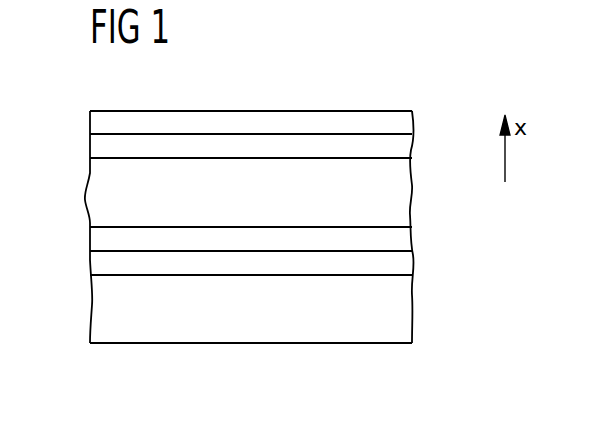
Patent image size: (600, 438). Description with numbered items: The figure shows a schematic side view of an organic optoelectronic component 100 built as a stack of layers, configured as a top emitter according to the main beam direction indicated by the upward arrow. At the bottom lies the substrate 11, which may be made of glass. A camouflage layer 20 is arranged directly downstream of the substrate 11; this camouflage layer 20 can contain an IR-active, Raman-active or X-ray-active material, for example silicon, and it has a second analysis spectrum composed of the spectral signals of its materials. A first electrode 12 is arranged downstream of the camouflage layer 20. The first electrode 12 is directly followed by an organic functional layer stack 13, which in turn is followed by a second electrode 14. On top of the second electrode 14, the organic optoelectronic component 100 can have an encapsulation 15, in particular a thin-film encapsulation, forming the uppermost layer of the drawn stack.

The organic optoelectronic component 100 is at (346, 69).
The encapsulation 15 is at (405, 123).
The second electrode 14 is at (405, 148).
The organic functional layer stack 13 is at (405, 198).
The first electrode 12 is at (405, 238).
The camouflage layer 20 is at (405, 263).
The substrate 11 is at (405, 308).